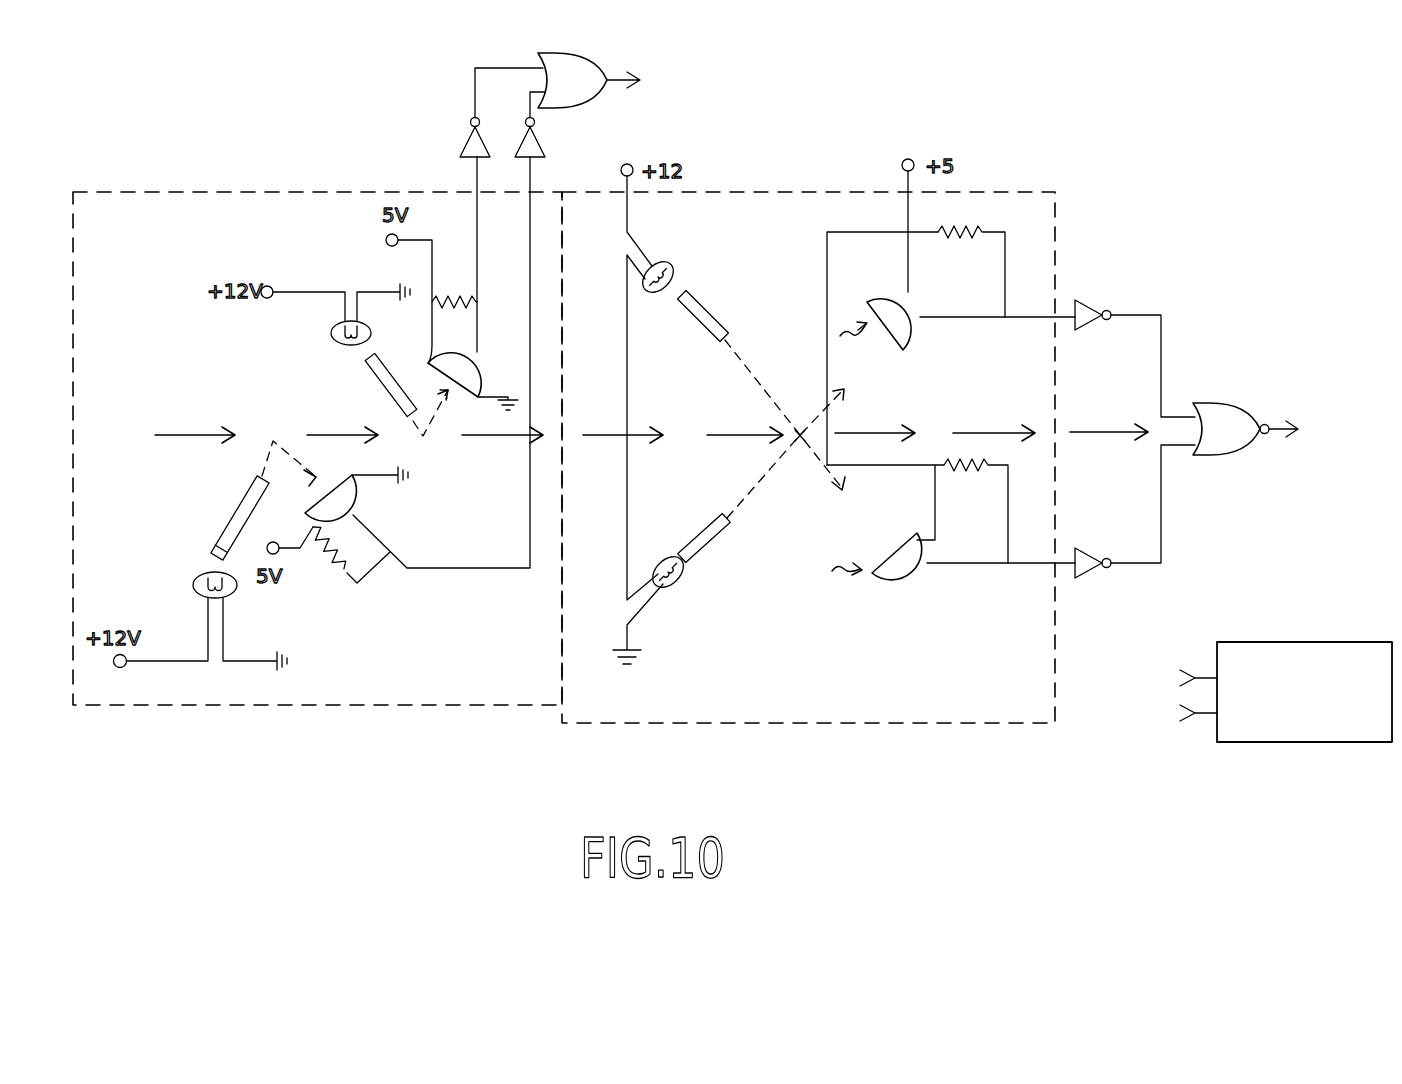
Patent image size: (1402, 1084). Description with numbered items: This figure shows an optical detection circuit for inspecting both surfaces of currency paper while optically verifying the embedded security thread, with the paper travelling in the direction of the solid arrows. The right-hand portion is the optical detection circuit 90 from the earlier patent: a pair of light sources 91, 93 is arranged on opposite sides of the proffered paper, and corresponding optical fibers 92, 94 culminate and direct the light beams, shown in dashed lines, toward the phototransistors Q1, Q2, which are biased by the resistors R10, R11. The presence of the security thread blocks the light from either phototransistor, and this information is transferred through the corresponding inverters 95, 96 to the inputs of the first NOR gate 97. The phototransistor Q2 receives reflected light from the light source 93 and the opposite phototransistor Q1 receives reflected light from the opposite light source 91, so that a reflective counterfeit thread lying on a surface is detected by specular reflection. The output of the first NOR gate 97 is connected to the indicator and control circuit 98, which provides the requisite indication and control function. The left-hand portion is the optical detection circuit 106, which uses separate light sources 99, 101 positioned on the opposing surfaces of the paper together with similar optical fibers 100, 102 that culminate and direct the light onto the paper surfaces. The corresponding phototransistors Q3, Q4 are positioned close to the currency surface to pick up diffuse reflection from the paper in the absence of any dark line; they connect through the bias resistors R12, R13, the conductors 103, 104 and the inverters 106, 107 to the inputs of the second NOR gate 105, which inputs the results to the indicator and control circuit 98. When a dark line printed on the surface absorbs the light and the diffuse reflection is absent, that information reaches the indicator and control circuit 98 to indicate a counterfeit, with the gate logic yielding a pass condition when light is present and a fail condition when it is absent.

The optical detection circuit 90 is at (973, 704).
The light source 91 is at (667, 261).
The optical fiber 92 is at (708, 305).
The light source 93 is at (676, 590).
The optical fiber 94 is at (714, 542).
The inverter 95 is at (1087, 301).
The inverter 96 is at (1084, 549).
The first NOR gate 97 is at (1222, 409).
The indicator and control circuit 98 is at (1238, 744).
The light source 99 is at (206, 575).
The optical fiber 100 is at (237, 497).
The light source 101 is at (331, 337).
The optical fiber 102 is at (372, 397).
The conductor 103 is at (467, 568).
The conductor 104 is at (477, 232).
The second NOR gate 105 is at (567, 55).
The optical detection circuit 106 is at (463, 142).
The inverter 107 is at (548, 137).
The phototransistor Q1 is at (957, 324).
The phototransistor Q2 is at (953, 556).
The phototransistor Q3 is at (473, 381).
The phototransistor Q4 is at (356, 494).
The resistor R10 is at (971, 256).
The resistor R11 is at (976, 511).
The bias resistor R12 is at (349, 563).
The bias resistor R13 is at (454, 286).